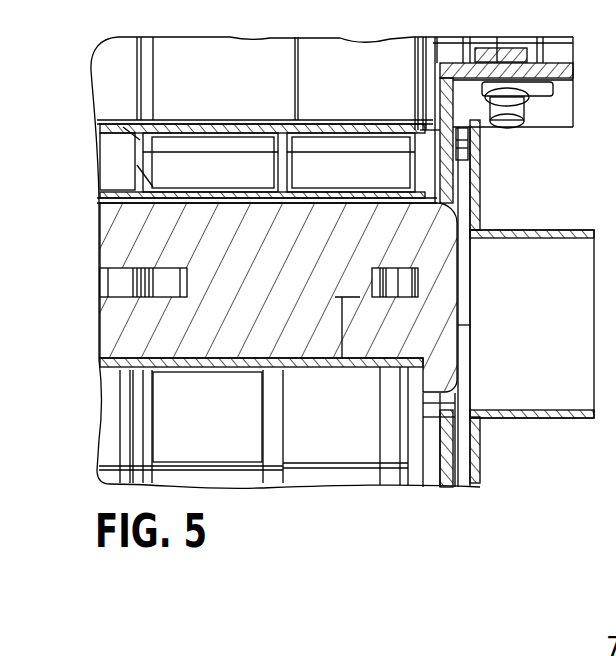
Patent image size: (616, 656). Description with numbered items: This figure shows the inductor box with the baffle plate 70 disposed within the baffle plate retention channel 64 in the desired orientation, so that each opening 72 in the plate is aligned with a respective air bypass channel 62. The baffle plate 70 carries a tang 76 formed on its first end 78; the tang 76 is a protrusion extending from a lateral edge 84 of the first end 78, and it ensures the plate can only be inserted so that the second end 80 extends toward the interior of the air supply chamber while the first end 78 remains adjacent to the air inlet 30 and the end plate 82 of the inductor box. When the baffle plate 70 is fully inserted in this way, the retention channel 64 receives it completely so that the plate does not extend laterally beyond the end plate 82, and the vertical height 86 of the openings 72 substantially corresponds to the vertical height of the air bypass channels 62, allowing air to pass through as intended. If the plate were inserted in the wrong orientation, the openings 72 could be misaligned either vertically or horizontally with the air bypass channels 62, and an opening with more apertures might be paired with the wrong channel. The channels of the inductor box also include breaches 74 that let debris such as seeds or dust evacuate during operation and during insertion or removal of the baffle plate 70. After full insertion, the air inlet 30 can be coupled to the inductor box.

The air inlet 30 is at (557, 420).
The air bypass channel 62 is at (168, 293).
The baffle plate retention channel 64 is at (203, 425).
The baffle plate 70 is at (275, 258).
The opening 72 is at (126, 297).
The breach 74 is at (193, 367).
The tang 76 is at (448, 378).
The first end 78 is at (443, 218).
The second end 80 is at (107, 215).
The end plate 82 is at (455, 173).
The lateral edge 84 is at (388, 365).
The vertical height 86 is at (340, 340).